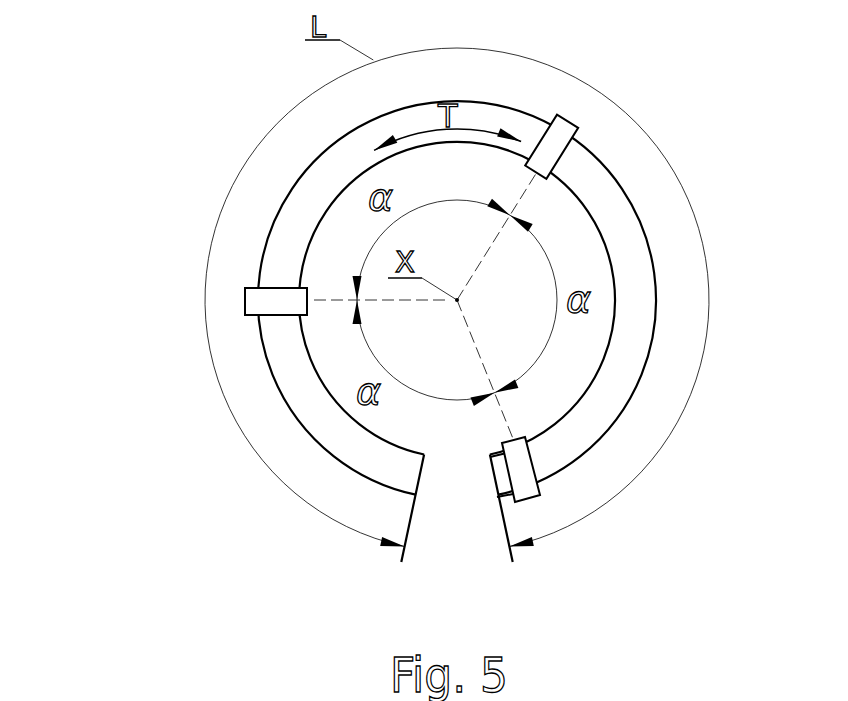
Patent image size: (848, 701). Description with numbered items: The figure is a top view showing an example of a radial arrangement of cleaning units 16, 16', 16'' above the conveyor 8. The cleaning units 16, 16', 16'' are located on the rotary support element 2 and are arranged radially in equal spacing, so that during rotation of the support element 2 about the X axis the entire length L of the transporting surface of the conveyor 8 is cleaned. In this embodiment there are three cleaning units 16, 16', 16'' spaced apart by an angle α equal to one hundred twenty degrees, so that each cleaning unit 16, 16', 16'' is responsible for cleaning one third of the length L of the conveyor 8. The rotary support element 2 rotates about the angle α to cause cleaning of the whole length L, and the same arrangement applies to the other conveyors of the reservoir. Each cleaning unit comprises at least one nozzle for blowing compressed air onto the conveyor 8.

The rotary support element 2 is at (638, 185).
The conveyor 8 is at (627, 233).
The cleaning unit 16 is at (563, 158).
The cleaning unit 16' is at (262, 286).
The cleaning unit 16'' is at (588, 429).